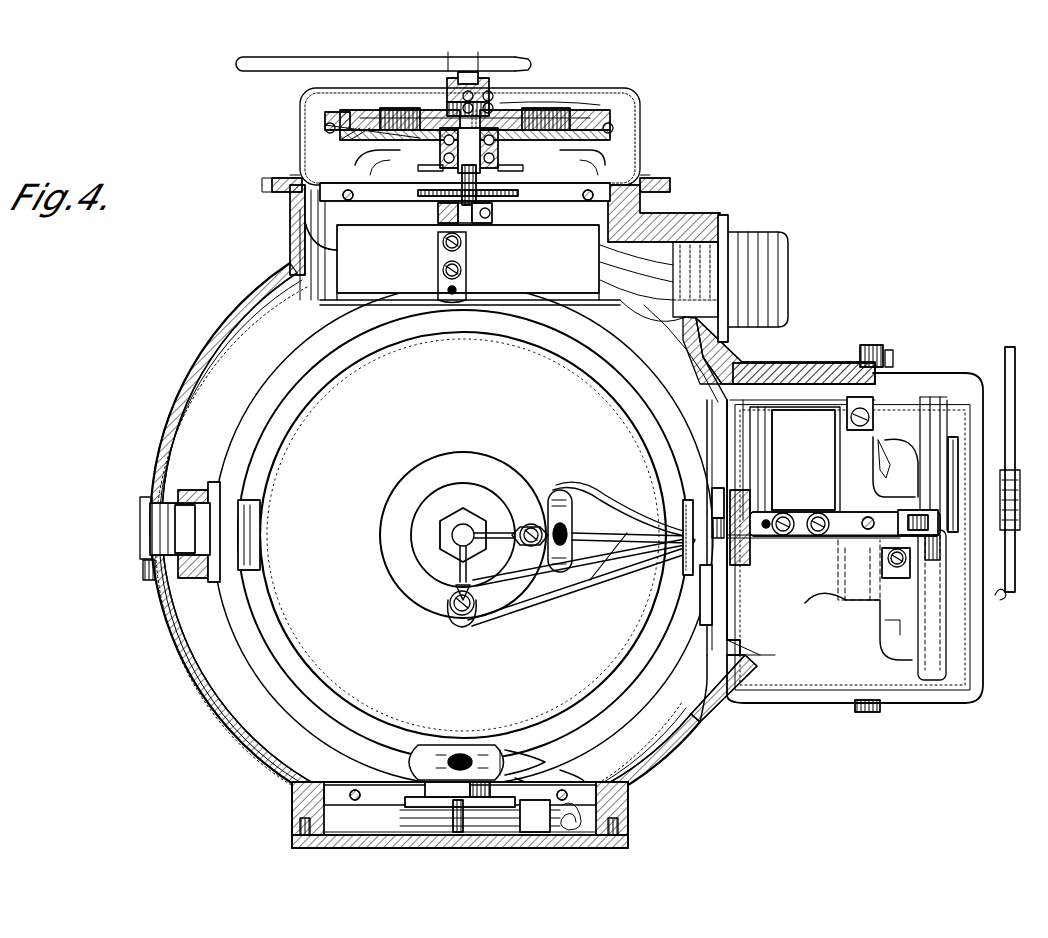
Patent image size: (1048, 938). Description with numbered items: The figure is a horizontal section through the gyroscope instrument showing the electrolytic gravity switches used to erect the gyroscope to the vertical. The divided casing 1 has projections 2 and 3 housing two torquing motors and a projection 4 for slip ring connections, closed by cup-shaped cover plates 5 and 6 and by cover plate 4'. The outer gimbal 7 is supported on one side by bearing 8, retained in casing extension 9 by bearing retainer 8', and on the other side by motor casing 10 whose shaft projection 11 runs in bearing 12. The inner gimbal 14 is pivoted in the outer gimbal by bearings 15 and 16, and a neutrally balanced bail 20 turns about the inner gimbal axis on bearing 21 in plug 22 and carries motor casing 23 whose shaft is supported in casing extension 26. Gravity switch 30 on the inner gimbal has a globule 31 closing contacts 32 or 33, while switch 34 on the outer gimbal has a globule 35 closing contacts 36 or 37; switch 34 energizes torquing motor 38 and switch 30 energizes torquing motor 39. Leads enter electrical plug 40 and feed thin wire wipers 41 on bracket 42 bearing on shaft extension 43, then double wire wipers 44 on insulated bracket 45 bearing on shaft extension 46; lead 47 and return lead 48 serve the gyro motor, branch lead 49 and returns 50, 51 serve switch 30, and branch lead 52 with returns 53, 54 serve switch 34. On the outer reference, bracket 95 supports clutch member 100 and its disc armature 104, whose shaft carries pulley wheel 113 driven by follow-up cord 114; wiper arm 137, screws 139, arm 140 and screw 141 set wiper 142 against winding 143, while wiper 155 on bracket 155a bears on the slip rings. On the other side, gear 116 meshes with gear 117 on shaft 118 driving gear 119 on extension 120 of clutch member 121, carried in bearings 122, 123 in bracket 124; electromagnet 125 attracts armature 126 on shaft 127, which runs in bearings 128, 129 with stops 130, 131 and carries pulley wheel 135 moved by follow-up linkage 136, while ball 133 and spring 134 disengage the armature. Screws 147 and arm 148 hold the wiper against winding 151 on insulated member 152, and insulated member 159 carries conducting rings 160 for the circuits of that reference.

The divided casing 1 is at (163, 443).
The projection 2 is at (826, 370).
The projection 3 is at (292, 216).
The projection 4 is at (479, 827).
The cover plate 4' is at (497, 838).
The cup-shaped cover plate 5 is at (962, 666).
The cup-shaped cover plate 6 is at (640, 143).
The outer gimbal 7 is at (657, 393).
The bearing 8 is at (608, 665).
The bearing retainer 8' is at (441, 794).
The casing extension 9 is at (330, 800).
The motor casing 10 is at (470, 265).
The shaft projection 11 is at (468, 222).
The bearing 12 is at (492, 222).
The inner gimbal 14 is at (463, 535).
The bearing 15 is at (694, 512).
The bearing 16 is at (258, 525).
The neutrally balanced bail 20 is at (195, 492).
The bearing 21 is at (185, 524).
The plug 22 is at (142, 540).
The motor casing 23 is at (786, 410).
The casing extension 26 is at (865, 395).
The gravity switch 30 is at (570, 505).
The globule 31 is at (572, 548).
The pair of contacts 32 is at (552, 516).
The pair of contacts 33 is at (572, 560).
The electrolytic gravity switch 34 is at (452, 745).
The globule 35 is at (476, 748).
The pair of contacts 36 is at (420, 760).
The pair of contacts 37 is at (502, 748).
The torquing motor 38 is at (768, 679).
The torquing motor 39 is at (327, 261).
The electrical plug 40 is at (775, 266).
The thin wire wipers 41 is at (455, 814).
The bracket 42 is at (548, 806).
The shaft extension 43 is at (452, 830).
The double wire wipers 44 is at (718, 528).
The insulated bracket 45 is at (716, 488).
The shaft extension 46 is at (715, 580).
The lead 47 is at (545, 595).
The lead 48 is at (623, 538).
The branch lead 49 is at (480, 620).
The return lead 50 is at (560, 488).
The return lead 51 is at (575, 490).
The branch lead 52 is at (438, 748).
The return lead 53 is at (535, 755).
The return lead 54 is at (578, 772).
The bracket 95 is at (898, 440).
The clutch member 100 is at (953, 437).
The circular disc armature 104 is at (940, 590).
The pulley wheel 113 is at (1000, 598).
The follow-up cord 114 is at (1010, 605).
The gear 116 is at (445, 222).
The gear 117 is at (425, 196).
The shaft 118 is at (465, 176).
The gear 119 is at (505, 172).
The extension 120 is at (415, 174).
The clutch member 121 is at (338, 112).
The bearing 122 is at (500, 155).
The bearing 123 is at (546, 119).
The bracket 124 is at (575, 165).
The electromagnet 125 is at (600, 112).
The armature 126 is at (580, 100).
The shaft 127 is at (495, 100).
The bearing 128 is at (492, 85).
The bearing 129 is at (560, 110).
The stop 130 is at (458, 78).
The stop 131 is at (426, 91).
The ball 133 is at (400, 119).
The spring 134 is at (440, 156).
The pulley wheel 135 is at (515, 61).
The follow-up linkage 136 is at (250, 64).
The wiper arm 137 is at (882, 558).
The screws 139 is at (816, 540).
The arm 140 is at (808, 520).
The screw 141 is at (868, 516).
The wiper 142 is at (861, 626).
The winding 143 is at (934, 395).
The screws 147 is at (462, 250).
The arm 148 is at (463, 268).
The winding 151 is at (612, 128).
The insulated member 152 is at (615, 120).
The wiper 155 is at (862, 516).
The bracket 155a is at (870, 573).
The circular insulated member 159 is at (330, 136).
The conducting rings 160 is at (360, 140).